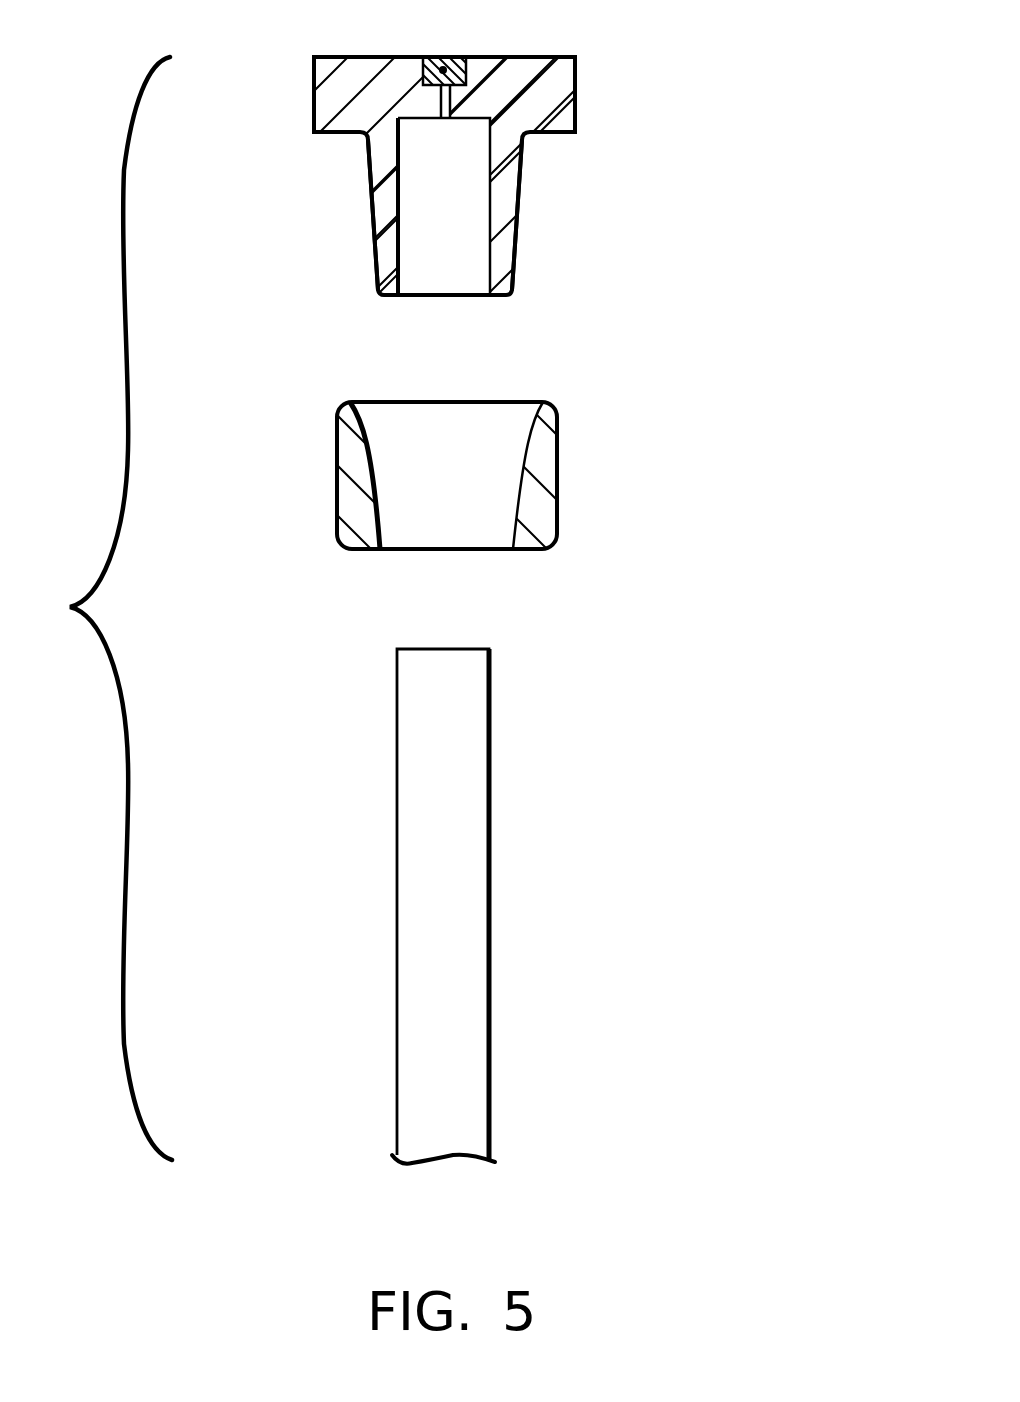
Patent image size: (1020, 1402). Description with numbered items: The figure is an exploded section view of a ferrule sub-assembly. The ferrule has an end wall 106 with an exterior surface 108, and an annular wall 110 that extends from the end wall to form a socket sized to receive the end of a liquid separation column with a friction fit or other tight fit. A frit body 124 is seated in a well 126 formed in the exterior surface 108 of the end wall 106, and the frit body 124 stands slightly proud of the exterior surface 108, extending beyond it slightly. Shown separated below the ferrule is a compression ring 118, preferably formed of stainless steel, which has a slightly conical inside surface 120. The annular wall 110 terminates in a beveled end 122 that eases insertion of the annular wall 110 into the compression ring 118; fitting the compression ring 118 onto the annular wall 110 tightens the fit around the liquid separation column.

The end wall 106 is at (332, 97).
The exterior surface 108 is at (578, 92).
The annular wall 110 is at (503, 156).
The compression ring 118 is at (553, 468).
The conical inside surface 120 is at (516, 489).
The beveled end 122 is at (496, 297).
The frit body 124 is at (438, 57).
The well 126 is at (441, 119).